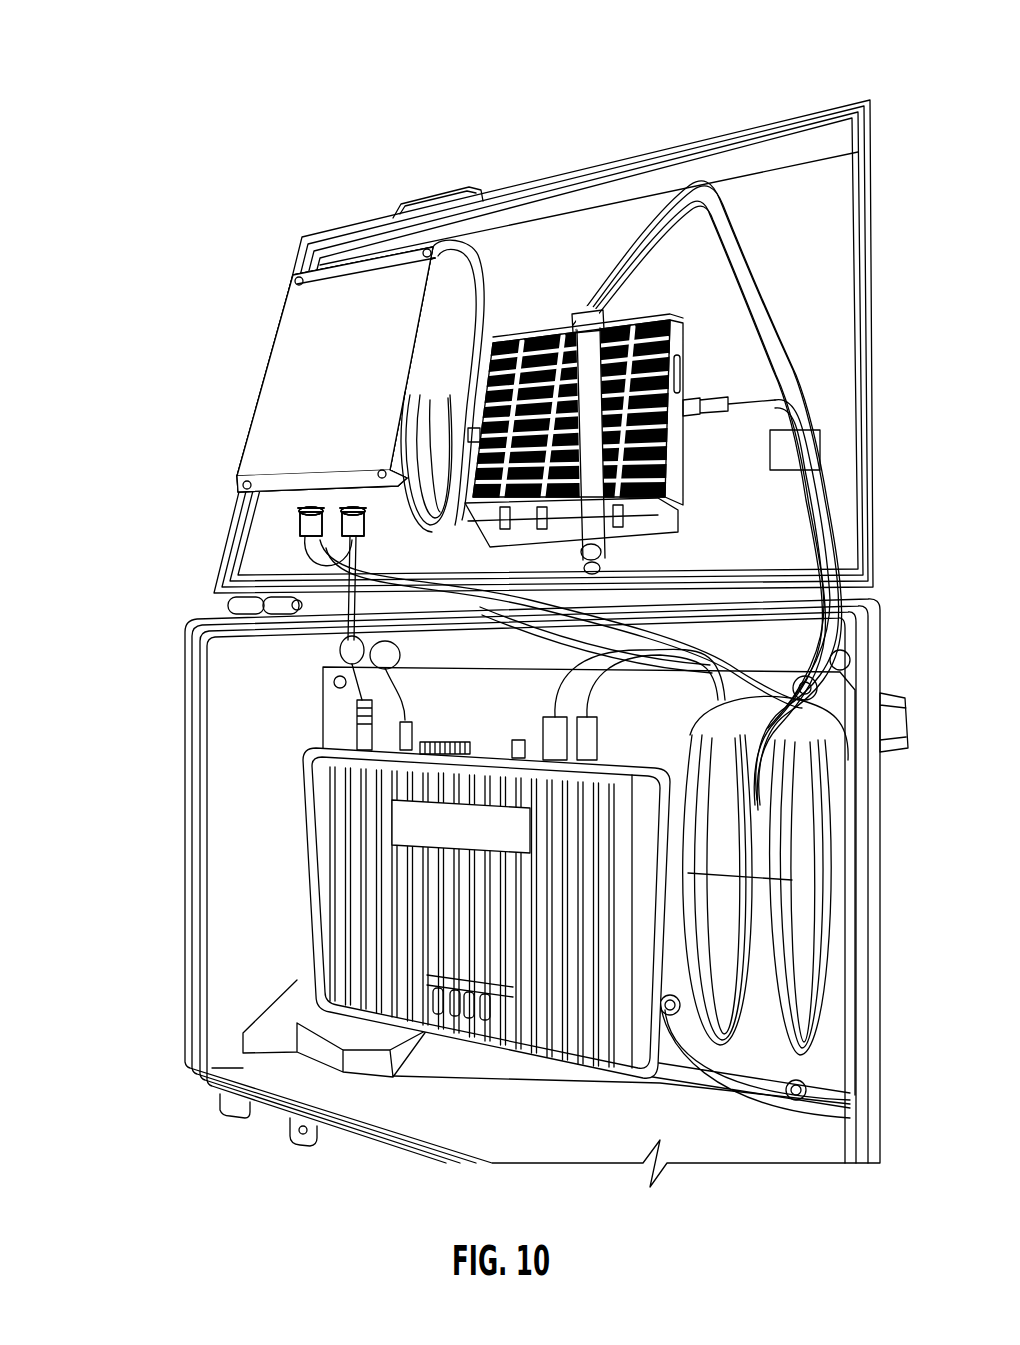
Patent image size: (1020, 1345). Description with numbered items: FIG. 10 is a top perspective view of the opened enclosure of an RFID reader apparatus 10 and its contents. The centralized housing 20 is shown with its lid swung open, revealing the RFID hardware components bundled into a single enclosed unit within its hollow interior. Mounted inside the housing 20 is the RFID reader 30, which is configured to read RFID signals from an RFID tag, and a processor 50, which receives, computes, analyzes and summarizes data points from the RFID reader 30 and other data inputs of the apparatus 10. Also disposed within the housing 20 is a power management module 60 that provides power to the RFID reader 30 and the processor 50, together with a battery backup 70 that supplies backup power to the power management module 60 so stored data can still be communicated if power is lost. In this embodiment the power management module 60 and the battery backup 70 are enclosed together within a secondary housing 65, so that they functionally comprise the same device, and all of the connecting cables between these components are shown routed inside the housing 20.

The RFID reader apparatus 10 is at (197, 563).
The housing 20 is at (838, 216).
The RFID reader 30 is at (367, 928).
The processor 50 is at (530, 365).
The power management module 60 is at (372, 293).
The secondary housing 65 is at (343, 393).
The battery backup 70 is at (336, 391).